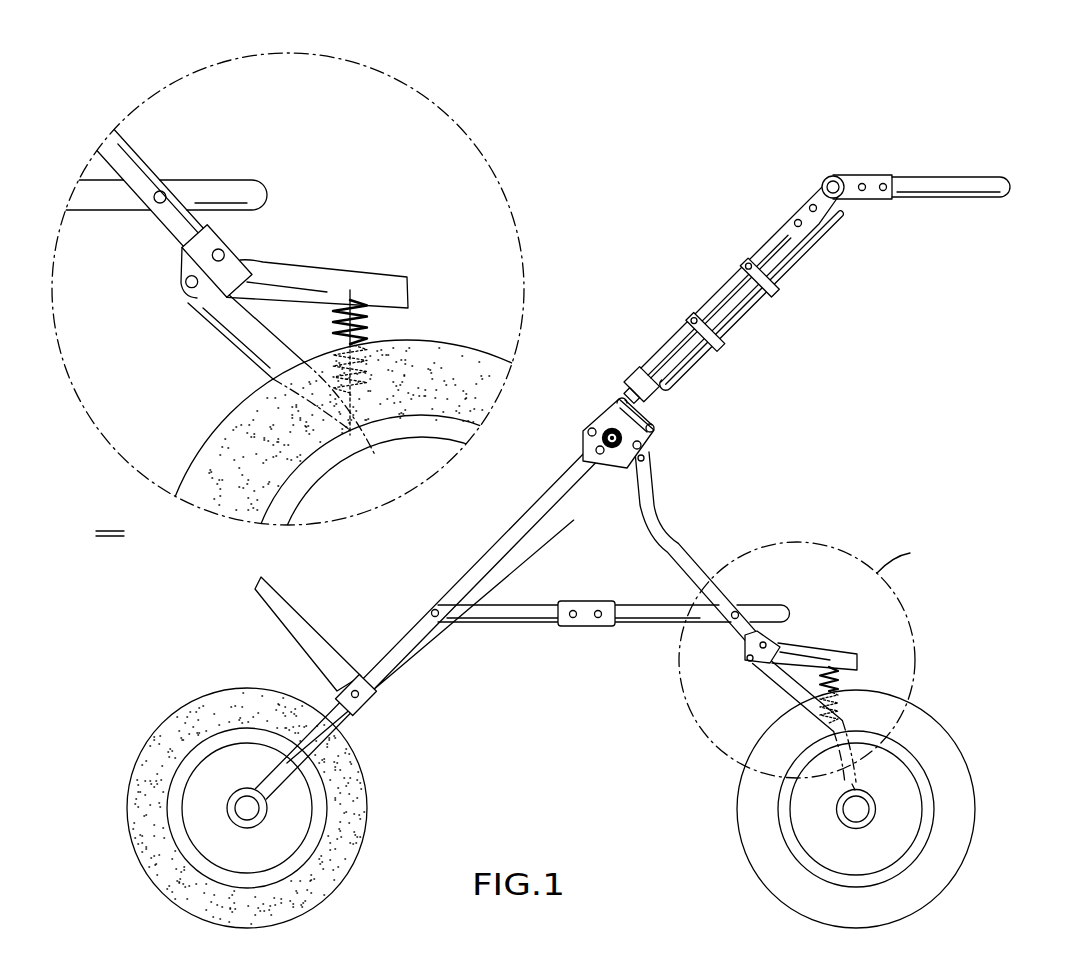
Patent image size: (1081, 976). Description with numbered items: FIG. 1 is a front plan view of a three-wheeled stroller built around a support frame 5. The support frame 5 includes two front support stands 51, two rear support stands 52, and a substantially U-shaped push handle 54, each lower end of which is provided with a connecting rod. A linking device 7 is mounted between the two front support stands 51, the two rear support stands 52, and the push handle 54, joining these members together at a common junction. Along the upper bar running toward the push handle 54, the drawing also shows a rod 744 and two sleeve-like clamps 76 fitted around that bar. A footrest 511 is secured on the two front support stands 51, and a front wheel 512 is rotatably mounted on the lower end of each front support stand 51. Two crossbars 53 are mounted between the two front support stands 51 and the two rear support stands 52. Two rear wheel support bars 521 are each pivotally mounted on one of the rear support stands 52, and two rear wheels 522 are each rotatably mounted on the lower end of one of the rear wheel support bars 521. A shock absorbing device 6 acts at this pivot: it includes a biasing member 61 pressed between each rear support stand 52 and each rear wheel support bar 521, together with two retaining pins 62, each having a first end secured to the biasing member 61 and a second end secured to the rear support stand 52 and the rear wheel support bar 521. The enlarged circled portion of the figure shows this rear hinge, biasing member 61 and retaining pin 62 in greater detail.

The support frame 5 is at (554, 490).
The front support stand 51 is at (530, 522).
The footrest 511 is at (313, 637).
The front wheel 512 is at (150, 762).
The rear support stand 52 is at (285, 272).
The rear wheel support bar 521 is at (233, 328).
The rear wheel 522 is at (225, 500).
The crossbar 53 is at (222, 186).
The push handle 54 is at (937, 180).
The shock absorbing device 6 is at (615, 468).
The biasing member 61 is at (371, 323).
The retaining pin 62 is at (350, 290).
The linking device 7 is at (606, 392).
The locking rod 744 is at (837, 237).
The clamp sleeve 76 is at (772, 324).